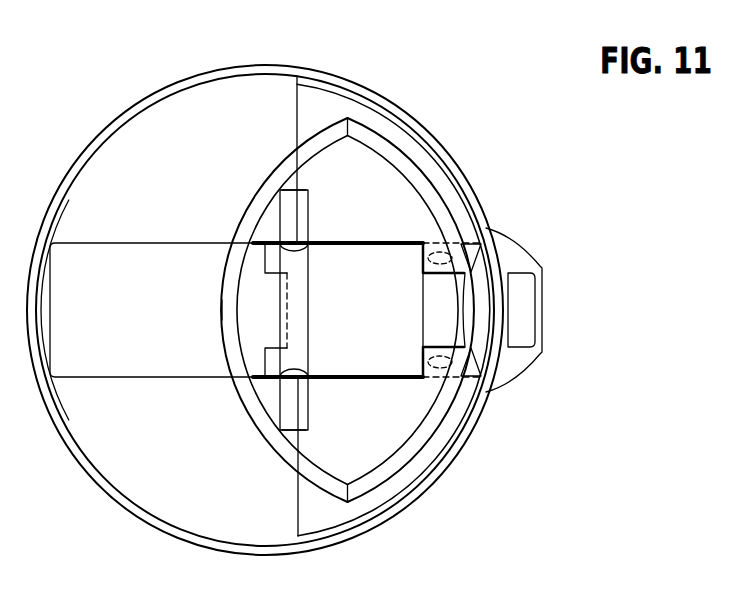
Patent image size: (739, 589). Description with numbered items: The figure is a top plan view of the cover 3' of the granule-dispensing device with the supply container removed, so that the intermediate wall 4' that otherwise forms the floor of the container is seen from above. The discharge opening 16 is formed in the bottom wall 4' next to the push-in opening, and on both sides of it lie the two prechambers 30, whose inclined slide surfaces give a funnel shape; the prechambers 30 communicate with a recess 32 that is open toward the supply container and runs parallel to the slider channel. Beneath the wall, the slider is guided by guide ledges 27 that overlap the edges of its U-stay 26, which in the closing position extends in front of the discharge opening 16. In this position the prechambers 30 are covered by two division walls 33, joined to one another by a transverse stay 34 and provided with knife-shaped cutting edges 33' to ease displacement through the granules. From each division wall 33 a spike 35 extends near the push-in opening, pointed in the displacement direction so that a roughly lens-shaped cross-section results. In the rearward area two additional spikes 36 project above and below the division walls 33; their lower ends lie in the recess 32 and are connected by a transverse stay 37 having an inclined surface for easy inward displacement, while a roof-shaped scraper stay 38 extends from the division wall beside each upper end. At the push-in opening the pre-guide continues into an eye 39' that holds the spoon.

The cover 3' is at (261, 285).
The intermediate wall 4' is at (94, 217).
The discharge opening 16 is at (360, 385).
The U-stay 26 is at (417, 304).
The guide ledges 27 is at (250, 545).
The prechambers 30 is at (334, 104).
The recess 32 is at (93, 365).
The division walls 33 is at (362, 302).
The knife-shaped edges 33' is at (382, 302).
The transverse stay 34 is at (226, 348).
The spikes 35 is at (464, 245).
The additional spikes 36 is at (290, 243).
The transverse stay 37 is at (300, 314).
The scraper stay 38 is at (294, 189).
The eye 39' is at (562, 310).